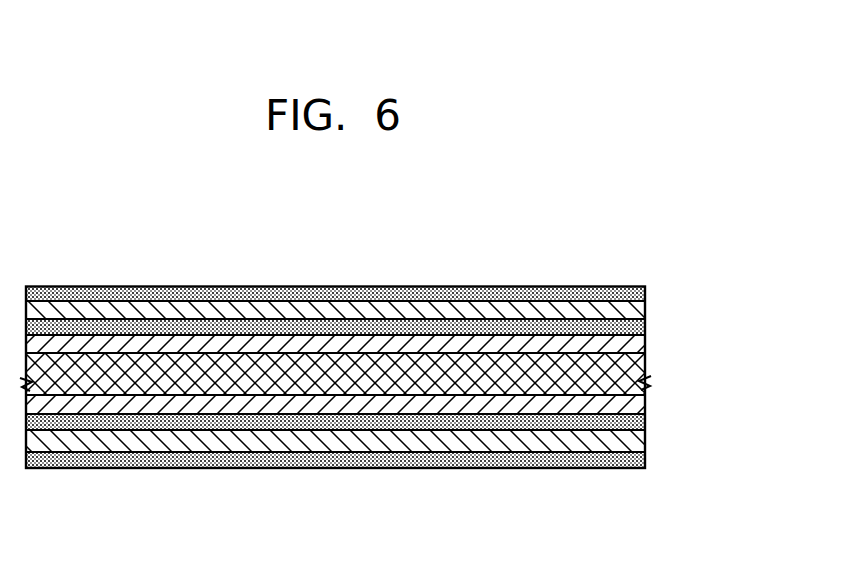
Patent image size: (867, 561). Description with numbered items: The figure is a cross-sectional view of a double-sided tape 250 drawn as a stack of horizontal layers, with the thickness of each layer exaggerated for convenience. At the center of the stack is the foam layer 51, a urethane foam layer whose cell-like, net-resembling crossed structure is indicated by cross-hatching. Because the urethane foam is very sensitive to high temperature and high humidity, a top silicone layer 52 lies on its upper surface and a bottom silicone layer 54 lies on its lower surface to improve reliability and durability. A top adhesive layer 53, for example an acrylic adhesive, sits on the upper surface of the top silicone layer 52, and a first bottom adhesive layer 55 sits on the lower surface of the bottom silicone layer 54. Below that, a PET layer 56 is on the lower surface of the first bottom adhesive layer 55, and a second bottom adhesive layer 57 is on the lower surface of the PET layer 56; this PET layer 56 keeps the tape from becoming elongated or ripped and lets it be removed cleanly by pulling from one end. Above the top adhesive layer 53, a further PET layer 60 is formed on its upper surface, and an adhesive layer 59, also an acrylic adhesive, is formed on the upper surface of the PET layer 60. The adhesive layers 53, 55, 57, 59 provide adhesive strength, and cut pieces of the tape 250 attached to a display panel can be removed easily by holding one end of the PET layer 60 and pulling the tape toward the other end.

The double-sided tape 250 is at (717, 263).
The adhesive layer 59 is at (645, 288).
The PET layer 60 is at (646, 306).
The top adhesive layer 53 is at (646, 326).
The top silicone layer 52 is at (646, 344).
The foam layer 51 is at (646, 373).
The bottom silicone layer 54 is at (646, 404).
The first bottom adhesive layer 55 is at (646, 424).
The PET layer 56 is at (646, 440).
The second bottom adhesive layer 57 is at (646, 460).